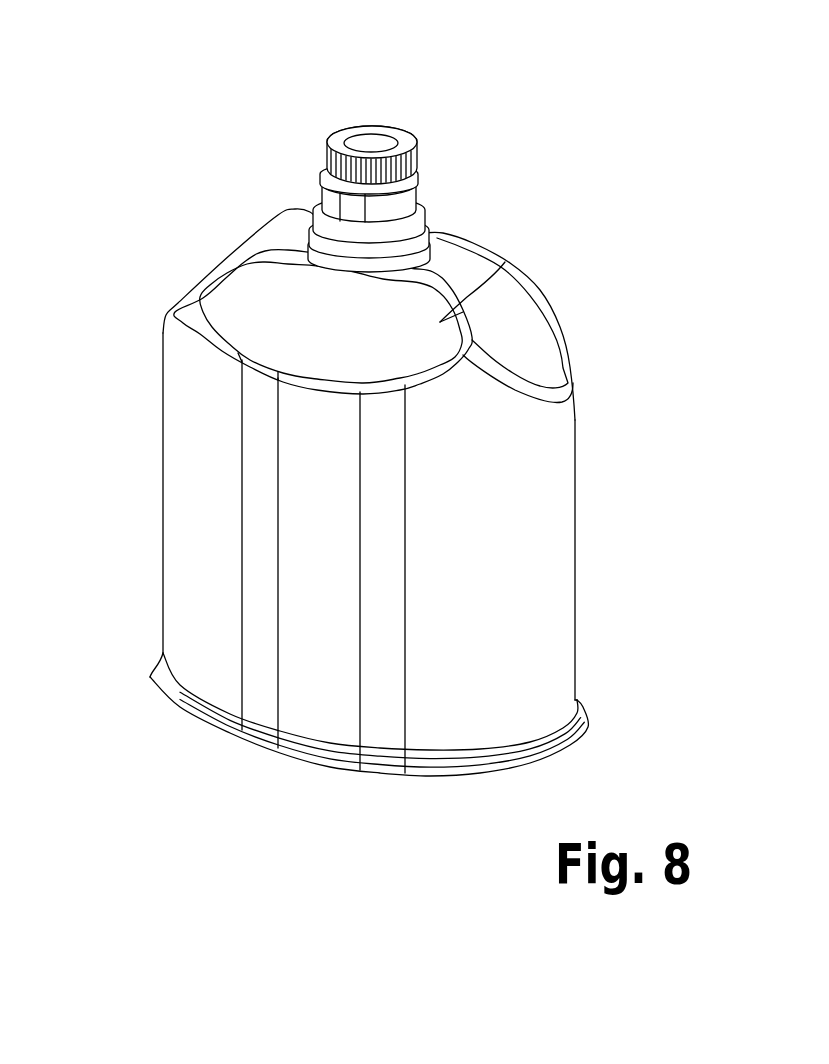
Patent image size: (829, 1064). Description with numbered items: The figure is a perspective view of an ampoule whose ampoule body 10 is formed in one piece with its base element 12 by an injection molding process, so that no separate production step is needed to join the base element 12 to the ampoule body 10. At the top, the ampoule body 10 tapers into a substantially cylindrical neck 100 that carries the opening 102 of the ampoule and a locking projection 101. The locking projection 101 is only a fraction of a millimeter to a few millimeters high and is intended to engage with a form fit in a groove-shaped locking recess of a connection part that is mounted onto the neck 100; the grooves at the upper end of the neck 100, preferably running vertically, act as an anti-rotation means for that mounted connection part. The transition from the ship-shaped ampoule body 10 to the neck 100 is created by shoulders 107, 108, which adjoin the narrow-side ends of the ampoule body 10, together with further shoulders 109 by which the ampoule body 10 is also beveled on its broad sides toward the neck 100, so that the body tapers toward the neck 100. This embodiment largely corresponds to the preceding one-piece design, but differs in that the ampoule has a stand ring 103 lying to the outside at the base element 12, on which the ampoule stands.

The ampoule body 10 is at (550, 543).
The base element 12 is at (334, 800).
The neck 100 is at (440, 175).
The locking projection 101 is at (320, 178).
The opening 102 is at (371, 143).
The stand ring 103 is at (575, 737).
The shoulder 107 is at (208, 280).
The shoulder 108 is at (513, 310).
The further shoulder 109 is at (278, 303).